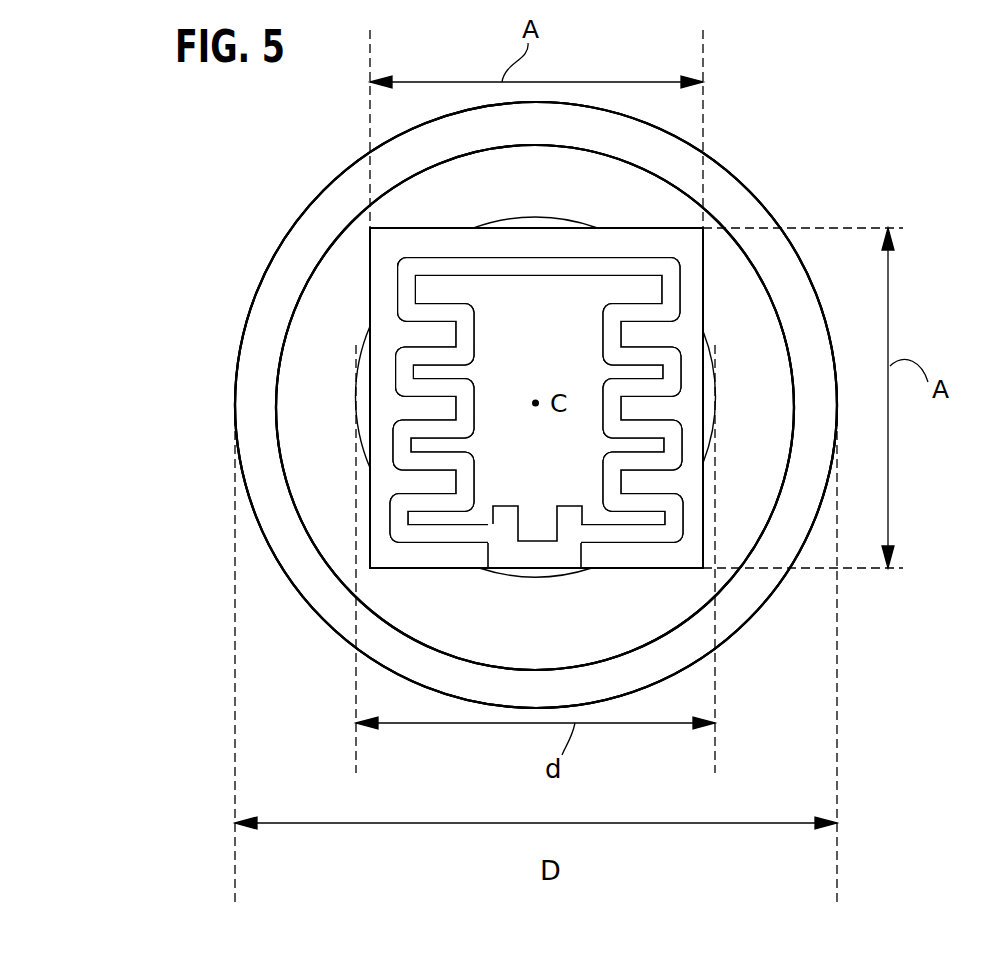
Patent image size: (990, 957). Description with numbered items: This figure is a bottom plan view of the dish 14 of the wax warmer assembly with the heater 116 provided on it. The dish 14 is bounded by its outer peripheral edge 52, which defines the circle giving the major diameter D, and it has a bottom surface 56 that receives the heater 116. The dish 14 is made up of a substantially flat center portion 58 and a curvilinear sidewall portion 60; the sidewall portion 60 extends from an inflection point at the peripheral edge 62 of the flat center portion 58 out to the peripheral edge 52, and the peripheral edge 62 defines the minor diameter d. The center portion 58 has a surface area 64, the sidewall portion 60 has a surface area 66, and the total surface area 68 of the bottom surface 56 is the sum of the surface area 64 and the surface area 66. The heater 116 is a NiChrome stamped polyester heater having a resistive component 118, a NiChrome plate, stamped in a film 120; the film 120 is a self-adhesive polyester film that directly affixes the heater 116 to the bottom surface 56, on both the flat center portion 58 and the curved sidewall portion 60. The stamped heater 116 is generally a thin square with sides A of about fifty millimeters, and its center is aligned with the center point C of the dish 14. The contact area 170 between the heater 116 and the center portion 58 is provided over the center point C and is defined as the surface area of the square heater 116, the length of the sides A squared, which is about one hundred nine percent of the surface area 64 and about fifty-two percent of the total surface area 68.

The dish 14 is at (327, 623).
The peripheral edge 52 is at (263, 270).
The bottom surface 56 is at (285, 385).
The center portion 58 is at (716, 391).
The sidewall portion 60 is at (325, 540).
The peripheral edge of the flat center portion 62 is at (548, 218).
The surface area of the center portion 64 is at (358, 432).
The surface area of the sidewall portion 66 is at (350, 263).
The total surface area 68 is at (732, 608).
The heater 116 is at (687, 252).
The resistive component 118 is at (675, 512).
The film 120 is at (382, 298).
The contact area 170 is at (658, 553).